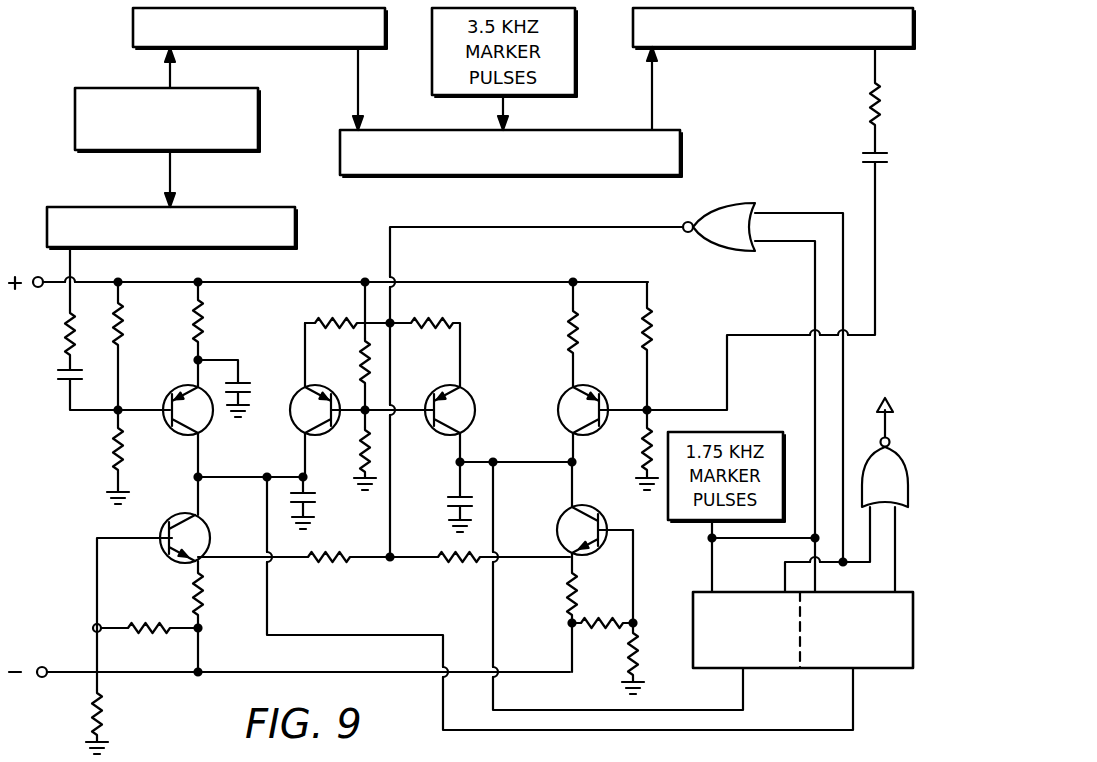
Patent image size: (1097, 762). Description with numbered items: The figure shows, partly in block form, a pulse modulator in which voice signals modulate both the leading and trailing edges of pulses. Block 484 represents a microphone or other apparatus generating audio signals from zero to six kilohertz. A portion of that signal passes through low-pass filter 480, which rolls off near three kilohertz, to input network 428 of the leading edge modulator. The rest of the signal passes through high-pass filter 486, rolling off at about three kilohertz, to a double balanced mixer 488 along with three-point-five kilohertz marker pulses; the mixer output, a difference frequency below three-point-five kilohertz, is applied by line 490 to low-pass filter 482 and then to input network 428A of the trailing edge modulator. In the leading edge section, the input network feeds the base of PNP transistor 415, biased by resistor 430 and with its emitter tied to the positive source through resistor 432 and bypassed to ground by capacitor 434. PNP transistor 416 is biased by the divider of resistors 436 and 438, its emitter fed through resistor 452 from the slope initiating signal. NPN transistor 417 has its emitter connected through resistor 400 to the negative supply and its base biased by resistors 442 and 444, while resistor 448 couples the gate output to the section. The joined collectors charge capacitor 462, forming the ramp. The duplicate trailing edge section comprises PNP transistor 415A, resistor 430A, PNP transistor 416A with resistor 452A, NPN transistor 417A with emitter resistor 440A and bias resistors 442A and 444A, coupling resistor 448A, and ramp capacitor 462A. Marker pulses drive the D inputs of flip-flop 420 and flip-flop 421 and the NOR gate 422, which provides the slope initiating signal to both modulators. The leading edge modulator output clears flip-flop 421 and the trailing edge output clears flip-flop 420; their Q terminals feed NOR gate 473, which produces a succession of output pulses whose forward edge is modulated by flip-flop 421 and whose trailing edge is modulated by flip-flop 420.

The block 484 is at (98, 88).
The high-pass filter 486 is at (321, 48).
The low-pass filter 480 is at (240, 207).
The double balanced mixer 488 is at (553, 176).
The line 490 is at (656, 87).
The low-pass filter 482 is at (816, 48).
The input network 428A is at (855, 153).
The NOR gate 422 is at (722, 253).
The input network 428 is at (55, 382).
The resistor 430 is at (110, 446).
The resistor 432 is at (205, 330).
The by-pass capacitor 434 is at (246, 384).
The PNP transistor 415 is at (182, 434).
The PNP transistor 416 is at (294, 430).
The NPN transistor 417 is at (168, 560).
The resistor 400 is at (206, 596).
The resistor 442 is at (137, 633).
The resistor 444 is at (110, 708).
The resistor 448 is at (320, 562).
The resistor 448A is at (452, 562).
The resistor 452 is at (330, 318).
The resistor 452A is at (446, 322).
The resistor 436 is at (360, 381).
The resistor 438 is at (360, 433).
The capacitor 462 is at (314, 501).
The capacitor 462A is at (446, 503).
The PNP transistor 416A is at (464, 394).
The PNP transistor 415A is at (558, 421).
The NPN transistor 417A is at (556, 522).
The resistor 430A is at (645, 437).
The resistor 440A is at (558, 583).
The resistor 442A is at (610, 628).
The resistor 444A is at (641, 657).
The flip-flop 420 is at (689, 600).
The flip-flop 421 is at (893, 670).
The NOR gate 473 is at (894, 500).